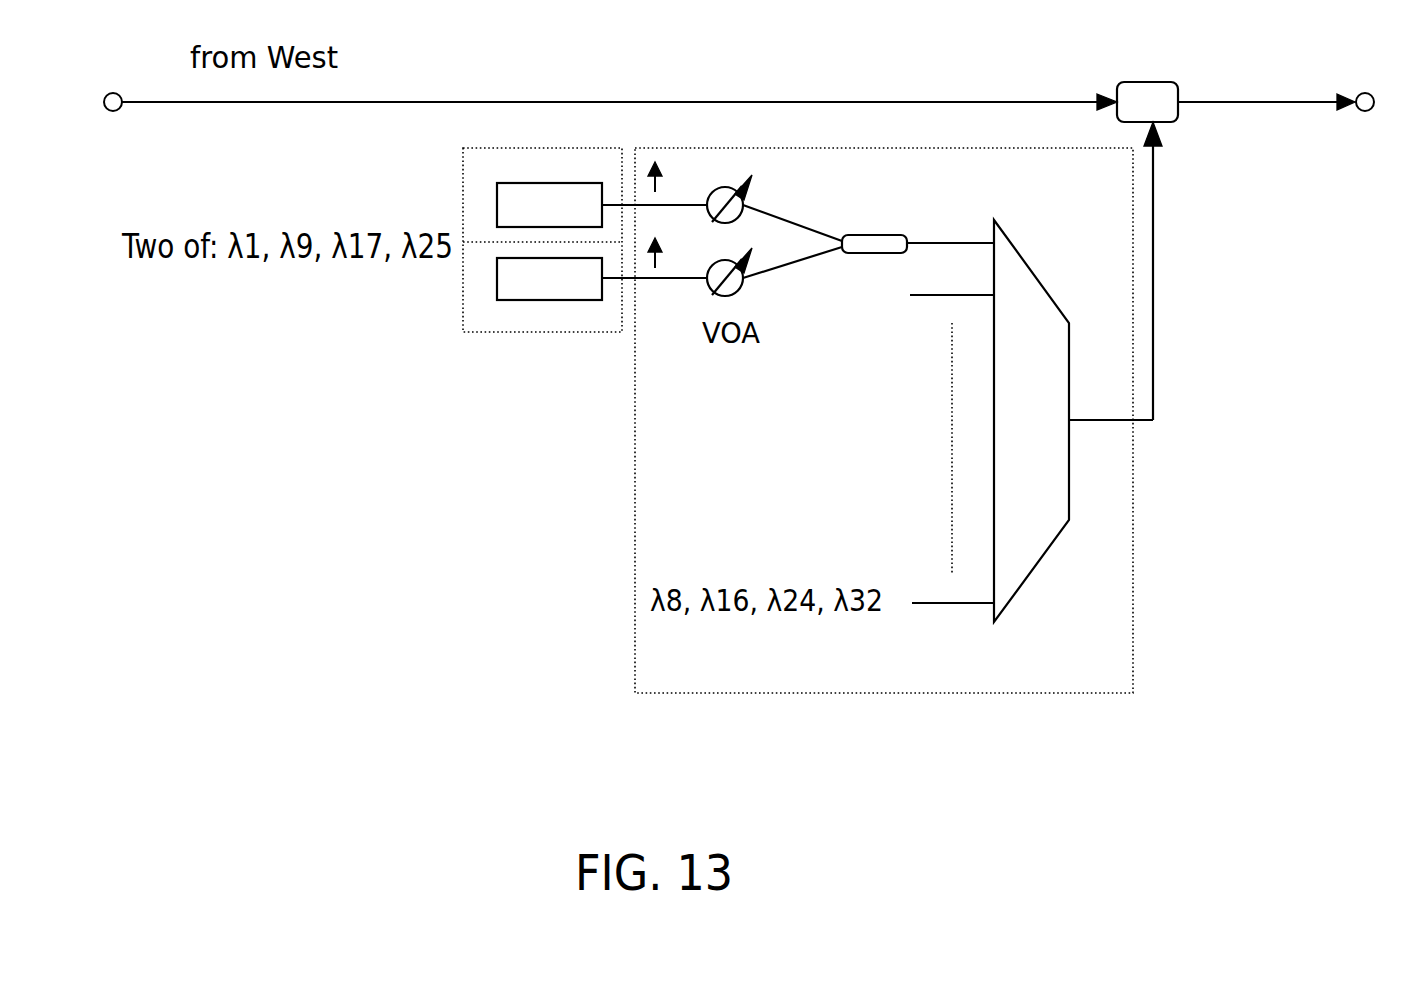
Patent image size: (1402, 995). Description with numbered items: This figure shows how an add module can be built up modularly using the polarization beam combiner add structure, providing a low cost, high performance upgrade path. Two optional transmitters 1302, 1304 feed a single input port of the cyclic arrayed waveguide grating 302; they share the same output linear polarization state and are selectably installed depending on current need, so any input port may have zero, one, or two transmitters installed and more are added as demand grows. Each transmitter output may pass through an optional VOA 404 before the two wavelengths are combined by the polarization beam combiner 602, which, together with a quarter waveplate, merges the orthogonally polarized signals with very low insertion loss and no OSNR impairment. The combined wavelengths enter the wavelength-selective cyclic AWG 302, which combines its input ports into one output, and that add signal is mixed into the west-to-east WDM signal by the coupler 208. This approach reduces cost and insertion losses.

The transmitter 1302 is at (583, 192).
The transmitter 1304 is at (583, 258).
The VOA 404 is at (744, 196).
The polarization beam combiner 602 is at (878, 253).
The cyclic arrayed waveguide grating 302 is at (1042, 293).
The coupler 208 is at (1175, 93).